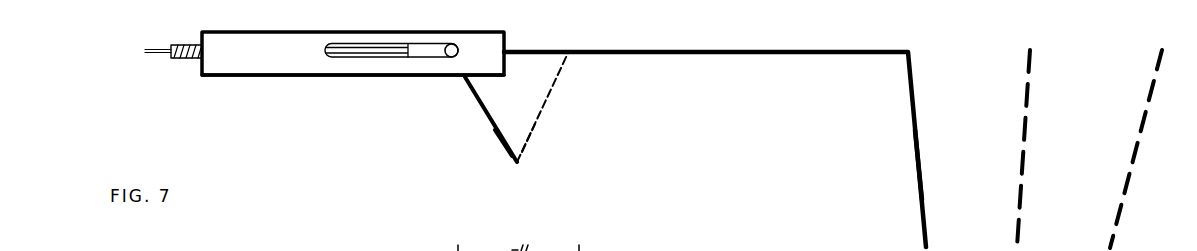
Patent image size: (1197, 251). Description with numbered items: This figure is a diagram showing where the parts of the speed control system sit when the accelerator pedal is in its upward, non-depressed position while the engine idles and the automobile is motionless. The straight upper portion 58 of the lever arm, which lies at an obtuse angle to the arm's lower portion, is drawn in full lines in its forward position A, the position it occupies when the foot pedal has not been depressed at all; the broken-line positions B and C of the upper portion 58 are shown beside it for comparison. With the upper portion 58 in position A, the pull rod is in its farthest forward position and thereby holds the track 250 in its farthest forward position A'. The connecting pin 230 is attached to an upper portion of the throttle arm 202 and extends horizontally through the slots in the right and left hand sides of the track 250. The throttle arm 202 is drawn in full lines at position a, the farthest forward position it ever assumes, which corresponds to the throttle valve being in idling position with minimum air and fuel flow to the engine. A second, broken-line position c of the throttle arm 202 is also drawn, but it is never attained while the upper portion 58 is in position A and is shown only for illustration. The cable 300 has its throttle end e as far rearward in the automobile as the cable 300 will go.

The track 250 is at (232, 31).
The cable 300 is at (157, 54).
The throttle end e is at (398, 48).
The connecting pin 230 is at (450, 44).
The farthest forward position of track A' is at (353, 92).
The upper portion of lever arm 58 is at (915, 151).
The forward position of upper arm portion A is at (906, 166).
The throttle arm 202 is at (483, 110).
The idling position of throttle arm a is at (500, 140).
The illustrative position of throttle arm c is at (530, 137).
The position B of upper arm portion B is at (1017, 196).
The position C of upper arm portion C is at (1125, 184).